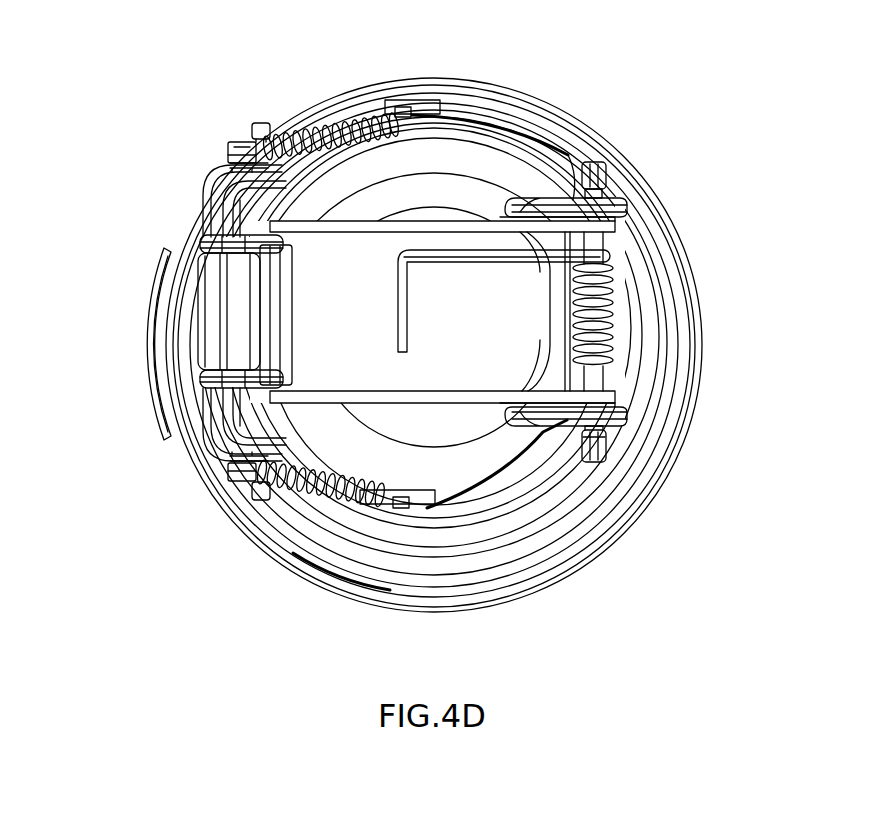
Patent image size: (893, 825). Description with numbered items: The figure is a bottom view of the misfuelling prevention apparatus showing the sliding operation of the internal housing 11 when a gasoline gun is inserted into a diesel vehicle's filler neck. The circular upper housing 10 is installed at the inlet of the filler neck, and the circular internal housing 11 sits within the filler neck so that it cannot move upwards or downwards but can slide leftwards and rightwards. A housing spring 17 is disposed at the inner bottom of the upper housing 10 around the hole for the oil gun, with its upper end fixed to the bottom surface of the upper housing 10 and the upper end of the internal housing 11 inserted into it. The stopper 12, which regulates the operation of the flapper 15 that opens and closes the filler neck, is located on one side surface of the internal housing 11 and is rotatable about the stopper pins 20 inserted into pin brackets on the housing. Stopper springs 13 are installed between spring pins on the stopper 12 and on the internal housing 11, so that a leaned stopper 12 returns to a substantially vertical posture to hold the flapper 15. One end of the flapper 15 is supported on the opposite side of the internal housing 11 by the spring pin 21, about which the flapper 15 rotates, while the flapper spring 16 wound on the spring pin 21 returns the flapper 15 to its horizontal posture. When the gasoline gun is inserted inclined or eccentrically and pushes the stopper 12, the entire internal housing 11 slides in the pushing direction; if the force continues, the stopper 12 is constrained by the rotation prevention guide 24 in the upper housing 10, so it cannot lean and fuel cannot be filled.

The upper housing 10 is at (338, 104).
The internal housing 11 is at (488, 162).
The stopper 12 is at (228, 332).
The stopper spring 13 is at (305, 478).
The flapper 15 is at (447, 372).
The flapper spring 16 is at (614, 312).
The housing spring 17 is at (640, 248).
The stopper pin 20 is at (255, 128).
The spring pin 21 is at (597, 447).
The rotation prevention guide 24 is at (160, 410).